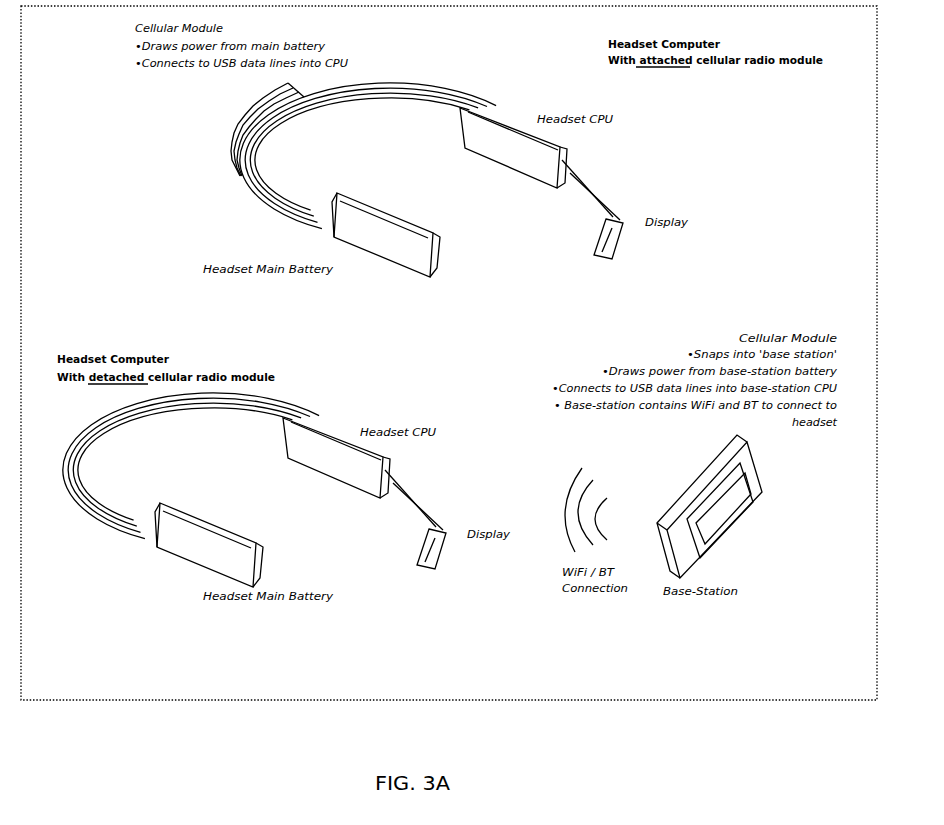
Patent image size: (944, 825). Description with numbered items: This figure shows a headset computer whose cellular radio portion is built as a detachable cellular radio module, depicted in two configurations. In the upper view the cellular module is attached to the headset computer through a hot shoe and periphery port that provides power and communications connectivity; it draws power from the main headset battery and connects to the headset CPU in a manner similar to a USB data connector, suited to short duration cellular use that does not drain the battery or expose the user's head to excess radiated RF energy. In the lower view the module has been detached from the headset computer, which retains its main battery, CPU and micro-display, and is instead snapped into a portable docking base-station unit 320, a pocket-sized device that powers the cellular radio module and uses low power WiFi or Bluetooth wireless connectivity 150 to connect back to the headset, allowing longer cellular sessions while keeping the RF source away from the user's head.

The wireless connectivity 150 is at (593, 597).
The docking base-station unit 320 is at (746, 529).